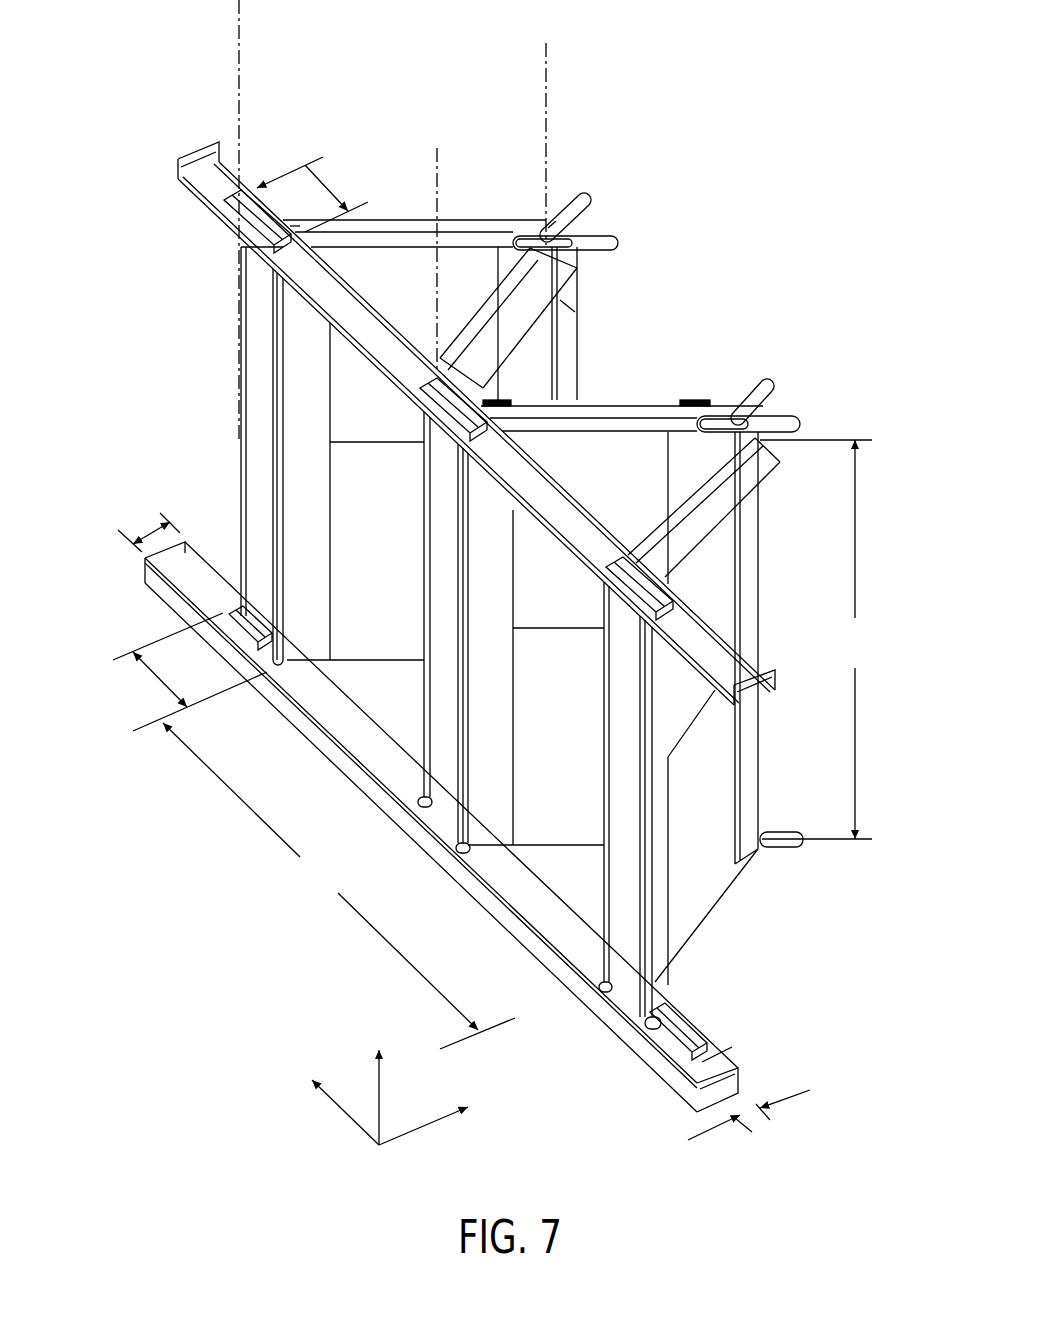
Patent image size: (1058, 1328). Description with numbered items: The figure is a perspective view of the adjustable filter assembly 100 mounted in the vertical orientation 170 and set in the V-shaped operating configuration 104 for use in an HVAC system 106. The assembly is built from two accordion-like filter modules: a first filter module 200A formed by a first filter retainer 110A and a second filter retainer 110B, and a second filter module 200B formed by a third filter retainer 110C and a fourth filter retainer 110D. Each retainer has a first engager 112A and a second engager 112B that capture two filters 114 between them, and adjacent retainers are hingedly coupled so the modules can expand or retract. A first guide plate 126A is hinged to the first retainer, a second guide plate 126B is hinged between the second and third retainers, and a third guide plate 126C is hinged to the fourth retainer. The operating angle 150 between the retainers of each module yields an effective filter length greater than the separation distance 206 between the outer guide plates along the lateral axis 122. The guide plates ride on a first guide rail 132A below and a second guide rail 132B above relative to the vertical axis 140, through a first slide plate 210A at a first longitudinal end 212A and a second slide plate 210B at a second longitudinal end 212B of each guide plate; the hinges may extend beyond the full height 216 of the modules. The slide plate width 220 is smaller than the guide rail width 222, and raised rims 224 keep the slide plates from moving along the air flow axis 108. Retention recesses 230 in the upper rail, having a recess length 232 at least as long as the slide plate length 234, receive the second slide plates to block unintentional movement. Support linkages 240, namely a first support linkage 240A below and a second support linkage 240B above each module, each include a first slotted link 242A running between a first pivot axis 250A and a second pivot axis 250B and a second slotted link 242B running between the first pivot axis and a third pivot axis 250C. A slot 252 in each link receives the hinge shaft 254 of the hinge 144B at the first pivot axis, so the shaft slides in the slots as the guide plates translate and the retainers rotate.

The adjustable filter assembly 100 is at (158, 140).
The V-shaped operating configuration 104 is at (150, 320).
The HVAC system 106 is at (177, 77).
The air flow axis 108 is at (418, 1128).
The first filter retainer 110A is at (419, 216).
The second filter retainer 110B is at (557, 292).
The third filter retainer 110C is at (601, 404).
The fourth filter retainer 110D is at (707, 531).
The first engager 112A is at (291, 321).
The second engager 112B is at (505, 263).
The filters 114 is at (522, 654).
The lateral axis 122 is at (349, 1118).
The first guide plate 126A is at (261, 367).
The second guide plate 126B is at (441, 575).
The third guide plate 126C is at (626, 899).
The first guide rail 132A is at (705, 1045).
The second guide rail 132B is at (779, 675).
The vertical axis 140 is at (382, 1100).
The hinge 144B is at (586, 231).
The operating angle 150 is at (478, 253).
The vertical orientation 170 is at (215, 137).
The first filter module 200A is at (597, 174).
The second filter module 200B is at (767, 354).
The separation distance 206 is at (339, 886).
The first slide plate 210A is at (242, 652).
The second slide plate 210B is at (255, 178).
The first longitudinal end 212A is at (262, 586).
The second longitudinal end 212B is at (252, 271).
The full height 216 is at (817, 639).
The slide plate width 220 is at (790, 1098).
The guide rail width 222 is at (146, 535).
The raised rims 224 is at (669, 1001).
The retention recesses 230 is at (224, 194).
The recess length 232 is at (348, 198).
The slide plate length 234 is at (155, 685).
The support linkages 240 is at (633, 108).
The first support linkage 240A is at (786, 854).
The second support linkage 240B is at (584, 187).
The first slotted link 242A is at (403, 245).
The second slotted link 242B is at (567, 305).
The first pivot axis 250A is at (543, 85).
The second pivot axis 250B is at (236, 20).
The third pivot axis 250C is at (439, 170).
The slot 252 is at (615, 245).
The hinge shaft 254 is at (576, 204).